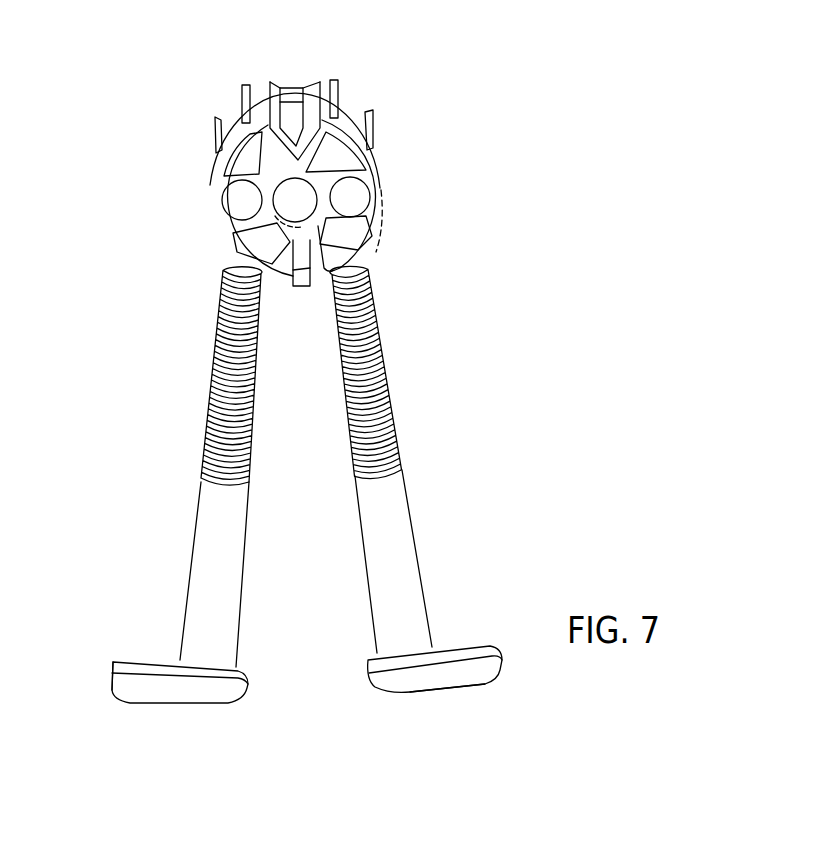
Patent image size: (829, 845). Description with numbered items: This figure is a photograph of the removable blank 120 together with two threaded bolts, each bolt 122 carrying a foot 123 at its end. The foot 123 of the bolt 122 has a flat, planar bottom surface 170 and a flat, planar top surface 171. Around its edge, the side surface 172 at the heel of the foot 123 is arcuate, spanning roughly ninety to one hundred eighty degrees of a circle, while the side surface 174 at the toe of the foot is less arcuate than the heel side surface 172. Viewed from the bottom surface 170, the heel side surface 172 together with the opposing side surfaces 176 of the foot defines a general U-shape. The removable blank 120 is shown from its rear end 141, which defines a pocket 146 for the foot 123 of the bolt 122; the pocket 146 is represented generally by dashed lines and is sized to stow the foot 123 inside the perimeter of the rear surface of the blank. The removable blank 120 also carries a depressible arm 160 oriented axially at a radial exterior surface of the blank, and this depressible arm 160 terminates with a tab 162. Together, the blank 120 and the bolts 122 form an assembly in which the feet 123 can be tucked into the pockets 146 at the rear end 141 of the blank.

The removable blank 120 is at (373, 120).
The depressible arm 160 is at (292, 92).
The tab 162 is at (290, 112).
The rear end 141 is at (220, 230).
The pocket 146 is at (371, 237).
The bolt 122 is at (381, 372).
The top surface 171 is at (467, 634).
The opposing side surfaces 176 is at (152, 658).
The side surface 172 is at (247, 675).
The side surface 174 is at (112, 676).
The foot 123 is at (480, 672).
The bottom surface 170 is at (435, 684).